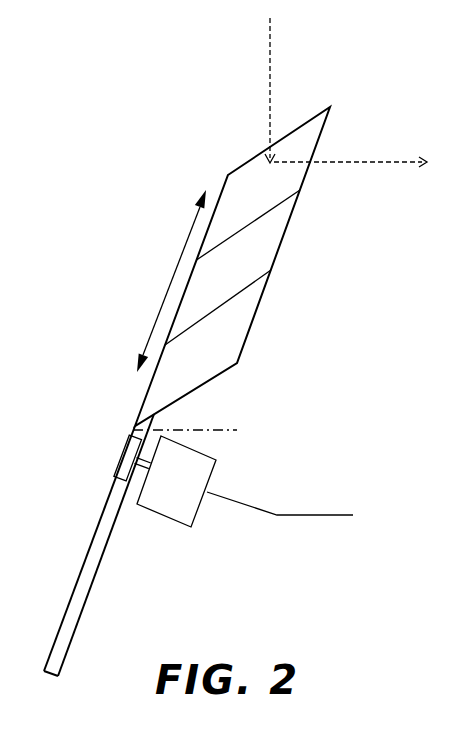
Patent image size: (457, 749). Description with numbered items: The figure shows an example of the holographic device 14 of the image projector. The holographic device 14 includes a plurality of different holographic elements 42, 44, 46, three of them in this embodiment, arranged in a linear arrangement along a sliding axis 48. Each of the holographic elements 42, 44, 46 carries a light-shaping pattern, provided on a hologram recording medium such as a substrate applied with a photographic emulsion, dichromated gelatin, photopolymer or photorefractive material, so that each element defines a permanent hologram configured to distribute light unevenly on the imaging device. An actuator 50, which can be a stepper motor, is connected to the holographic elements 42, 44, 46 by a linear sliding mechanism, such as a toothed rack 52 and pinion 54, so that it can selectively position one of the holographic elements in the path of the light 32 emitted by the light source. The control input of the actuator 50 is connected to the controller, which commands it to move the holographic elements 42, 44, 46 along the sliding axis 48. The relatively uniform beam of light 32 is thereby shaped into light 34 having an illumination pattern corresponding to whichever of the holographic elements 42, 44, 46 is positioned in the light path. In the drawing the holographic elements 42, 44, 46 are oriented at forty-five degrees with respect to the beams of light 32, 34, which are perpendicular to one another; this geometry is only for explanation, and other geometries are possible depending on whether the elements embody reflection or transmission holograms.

The holographic device 14 is at (105, 258).
The light 32 is at (284, 90).
The light 34 is at (350, 151).
The holographic element 42 is at (250, 266).
The holographic element 44 is at (262, 238).
The holographic element 46 is at (228, 335).
The sliding axis 48 is at (171, 281).
The actuator 50 is at (188, 490).
The toothed rack 52 is at (105, 515).
The pinion 54 is at (132, 467).